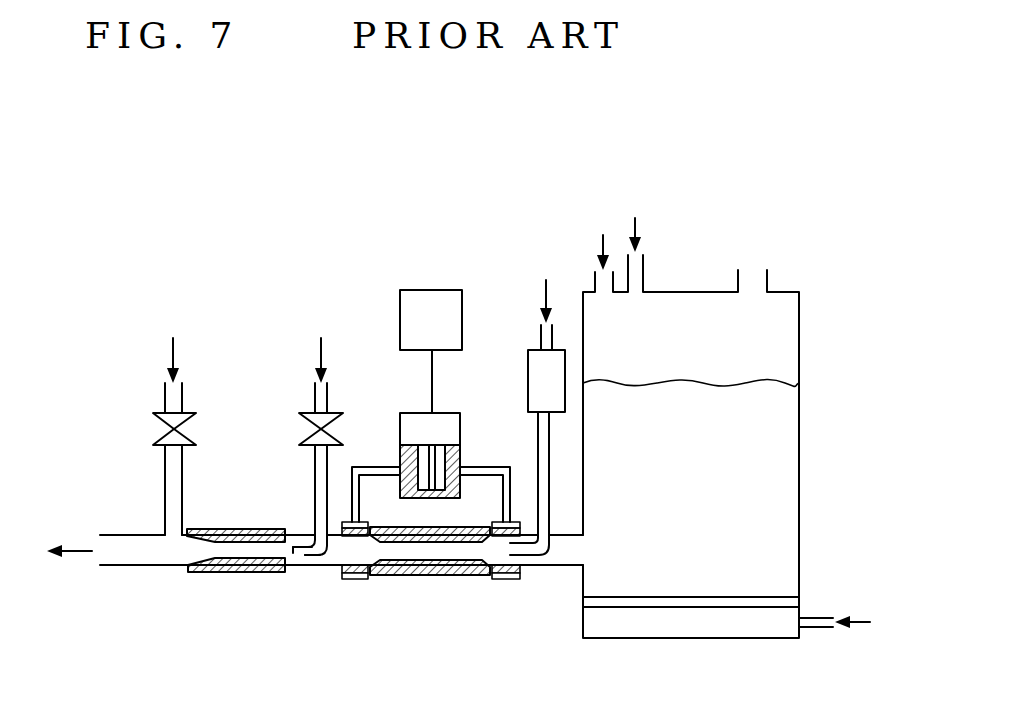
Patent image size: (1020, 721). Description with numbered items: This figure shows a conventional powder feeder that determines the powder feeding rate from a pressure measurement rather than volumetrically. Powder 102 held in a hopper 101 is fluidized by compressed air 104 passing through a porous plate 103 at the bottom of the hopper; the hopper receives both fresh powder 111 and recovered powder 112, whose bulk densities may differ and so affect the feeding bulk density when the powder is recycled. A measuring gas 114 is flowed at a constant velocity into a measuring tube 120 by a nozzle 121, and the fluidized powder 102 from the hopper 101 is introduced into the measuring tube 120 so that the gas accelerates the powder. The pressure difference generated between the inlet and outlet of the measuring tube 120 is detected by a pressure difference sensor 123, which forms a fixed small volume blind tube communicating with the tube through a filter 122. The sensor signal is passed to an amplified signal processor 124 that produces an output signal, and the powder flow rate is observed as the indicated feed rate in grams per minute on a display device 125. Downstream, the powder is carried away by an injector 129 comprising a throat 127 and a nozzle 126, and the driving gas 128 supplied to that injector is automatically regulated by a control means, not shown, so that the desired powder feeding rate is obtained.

The hopper 101 is at (800, 447).
The fluidized powder 102 is at (780, 403).
The porous plate 103 is at (745, 602).
The compressed air 104 is at (858, 622).
The fresh powder 111 is at (598, 239).
The recovered powder 112 is at (637, 231).
The measuring gas 114 is at (543, 297).
The measuring tube 120 is at (415, 550).
The nozzle 121 is at (530, 548).
The filter 122 is at (345, 522).
The pressure difference sensor 123 is at (463, 450).
The amplified signal processor 124 is at (415, 413).
The display device 125 is at (408, 305).
The nozzle 126 is at (300, 557).
The throat 127 is at (245, 574).
The driving gas 128 is at (320, 356).
The injector 129 is at (298, 642).